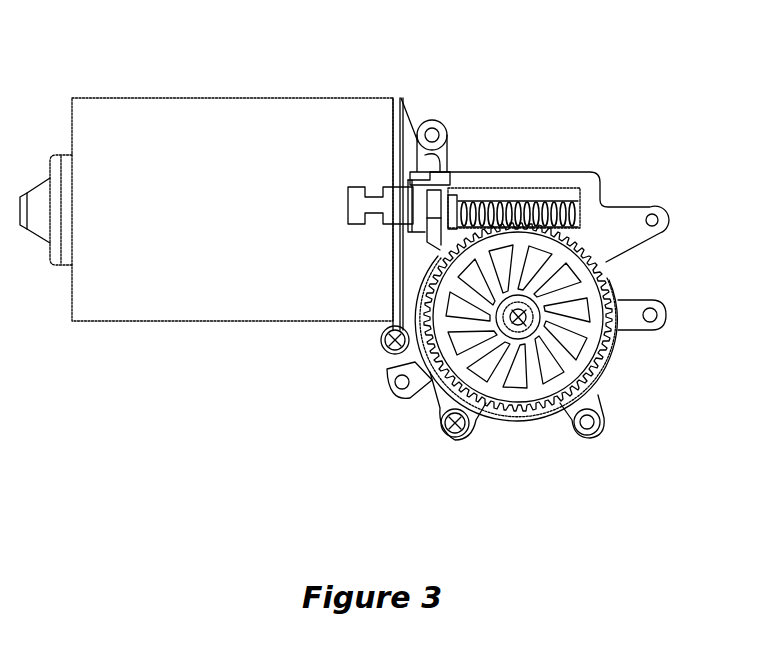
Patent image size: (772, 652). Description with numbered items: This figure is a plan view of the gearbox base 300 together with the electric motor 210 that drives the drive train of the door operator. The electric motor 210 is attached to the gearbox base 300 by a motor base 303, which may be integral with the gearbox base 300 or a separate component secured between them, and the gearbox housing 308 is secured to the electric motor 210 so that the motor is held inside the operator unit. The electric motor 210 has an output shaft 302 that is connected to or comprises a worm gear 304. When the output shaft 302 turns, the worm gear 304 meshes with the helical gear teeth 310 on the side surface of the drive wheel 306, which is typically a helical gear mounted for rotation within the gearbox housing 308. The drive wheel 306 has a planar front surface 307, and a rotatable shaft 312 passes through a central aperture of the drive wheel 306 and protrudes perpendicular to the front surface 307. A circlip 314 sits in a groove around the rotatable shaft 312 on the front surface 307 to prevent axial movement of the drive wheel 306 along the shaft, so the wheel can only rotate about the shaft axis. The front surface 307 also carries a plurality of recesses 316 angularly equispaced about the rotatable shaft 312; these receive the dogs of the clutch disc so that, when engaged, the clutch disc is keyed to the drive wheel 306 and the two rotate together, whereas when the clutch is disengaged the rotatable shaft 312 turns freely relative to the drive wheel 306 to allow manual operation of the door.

The gearbox base 300 is at (640, 58).
The electric motor 210 is at (232, 97).
The motor base 303 is at (400, 97).
The output shaft 302 is at (456, 205).
The worm gear 304 is at (503, 197).
The drive wheel 306 is at (540, 240).
The gearbox housing 308 is at (582, 185).
The planar front surface 307 is at (614, 264).
The helical gear teeth 310 is at (606, 276).
The recesses 316 is at (545, 305).
The rotatable shaft 312 is at (530, 322).
The circlip 314 is at (588, 368).